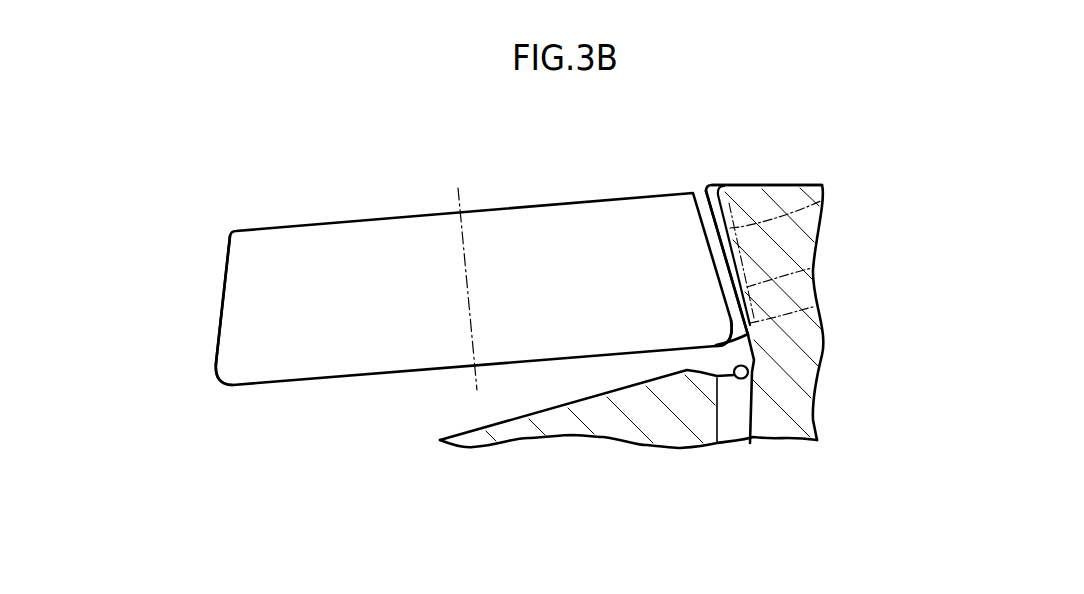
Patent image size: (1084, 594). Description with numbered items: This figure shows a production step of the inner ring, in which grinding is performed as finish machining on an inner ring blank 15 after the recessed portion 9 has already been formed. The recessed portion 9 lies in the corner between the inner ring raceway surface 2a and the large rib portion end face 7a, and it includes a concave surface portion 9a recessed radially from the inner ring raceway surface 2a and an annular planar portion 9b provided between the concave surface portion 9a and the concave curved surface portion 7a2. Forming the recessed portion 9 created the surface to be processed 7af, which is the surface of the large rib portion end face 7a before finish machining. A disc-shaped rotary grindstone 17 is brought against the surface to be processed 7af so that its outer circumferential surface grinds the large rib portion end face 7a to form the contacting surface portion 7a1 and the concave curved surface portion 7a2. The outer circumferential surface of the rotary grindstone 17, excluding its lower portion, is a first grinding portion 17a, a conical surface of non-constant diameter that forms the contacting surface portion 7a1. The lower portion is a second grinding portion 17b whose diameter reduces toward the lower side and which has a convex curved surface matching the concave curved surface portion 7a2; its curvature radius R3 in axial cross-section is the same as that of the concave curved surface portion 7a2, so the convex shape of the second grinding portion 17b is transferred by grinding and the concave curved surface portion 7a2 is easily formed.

The rotary grindstone 17 is at (386, 216).
The first grinding portion 17a is at (226, 272).
The second grinding portion 17b is at (215, 367).
The curvature radius of the second grinding portion R3 is at (727, 323).
The inner ring raceway surface 2a is at (520, 417).
The large rib portion end face 7a is at (812, 270).
The surface to be processed 7af is at (703, 239).
The contacting surface portion 7a1 is at (827, 203).
The concave curved surface portion 7a2 is at (813, 312).
The inner ring blank 15 is at (750, 167).
The recessed portion 9 is at (716, 378).
The concave surface portion 9a is at (749, 443).
The annular planar portion 9b is at (727, 339).